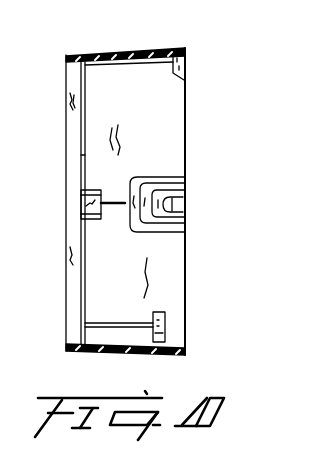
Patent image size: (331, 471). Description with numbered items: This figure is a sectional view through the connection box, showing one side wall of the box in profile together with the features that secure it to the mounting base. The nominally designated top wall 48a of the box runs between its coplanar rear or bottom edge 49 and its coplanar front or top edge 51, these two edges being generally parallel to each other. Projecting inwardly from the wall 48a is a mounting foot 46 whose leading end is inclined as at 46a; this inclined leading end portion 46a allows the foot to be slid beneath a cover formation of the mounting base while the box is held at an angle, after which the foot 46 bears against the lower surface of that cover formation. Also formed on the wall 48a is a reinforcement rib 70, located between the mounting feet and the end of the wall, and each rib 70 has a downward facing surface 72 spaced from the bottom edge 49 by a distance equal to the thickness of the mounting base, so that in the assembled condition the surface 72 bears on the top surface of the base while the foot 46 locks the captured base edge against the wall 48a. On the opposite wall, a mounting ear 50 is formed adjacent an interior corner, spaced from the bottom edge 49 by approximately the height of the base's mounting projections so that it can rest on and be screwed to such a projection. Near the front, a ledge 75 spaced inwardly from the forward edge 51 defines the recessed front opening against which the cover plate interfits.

The mounting feet 46 is at (186, 70).
The inclined leading end portions 46a is at (173, 76).
The top wall 48a is at (117, 52).
The bottom edges 49 is at (186, 351).
The mounting ears 50 is at (166, 318).
The front edges 51 is at (186, 273).
The reinforcement ribs 70 is at (128, 63).
The downward facing surface 72 is at (187, 60).
The ledges 75 is at (82, 343).